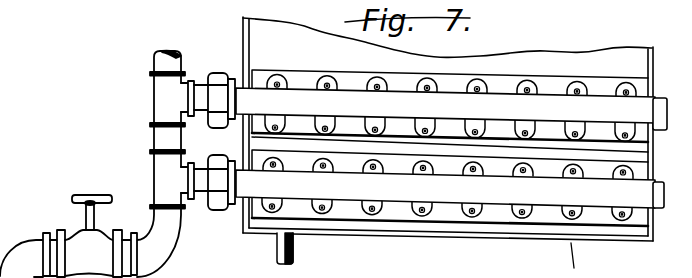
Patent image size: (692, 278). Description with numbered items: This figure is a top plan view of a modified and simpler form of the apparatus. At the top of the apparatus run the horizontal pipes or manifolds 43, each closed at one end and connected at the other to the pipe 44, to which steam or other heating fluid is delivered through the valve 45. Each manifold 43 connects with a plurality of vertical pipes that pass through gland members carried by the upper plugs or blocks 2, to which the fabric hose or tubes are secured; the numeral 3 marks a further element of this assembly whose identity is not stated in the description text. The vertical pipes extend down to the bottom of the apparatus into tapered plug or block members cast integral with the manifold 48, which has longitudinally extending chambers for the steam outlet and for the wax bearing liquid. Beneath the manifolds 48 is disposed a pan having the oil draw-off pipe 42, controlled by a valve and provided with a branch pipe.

The upper plugs or blocks 2 is at (321, 84).
The paddles 3 is at (378, 80).
The oil draw-off pipe 42 is at (276, 255).
The horizontal pipes or manifolds 43 is at (502, 104).
The pipe 44 is at (152, 137).
The valve 45 is at (76, 197).
The manifold 48 is at (608, 83).